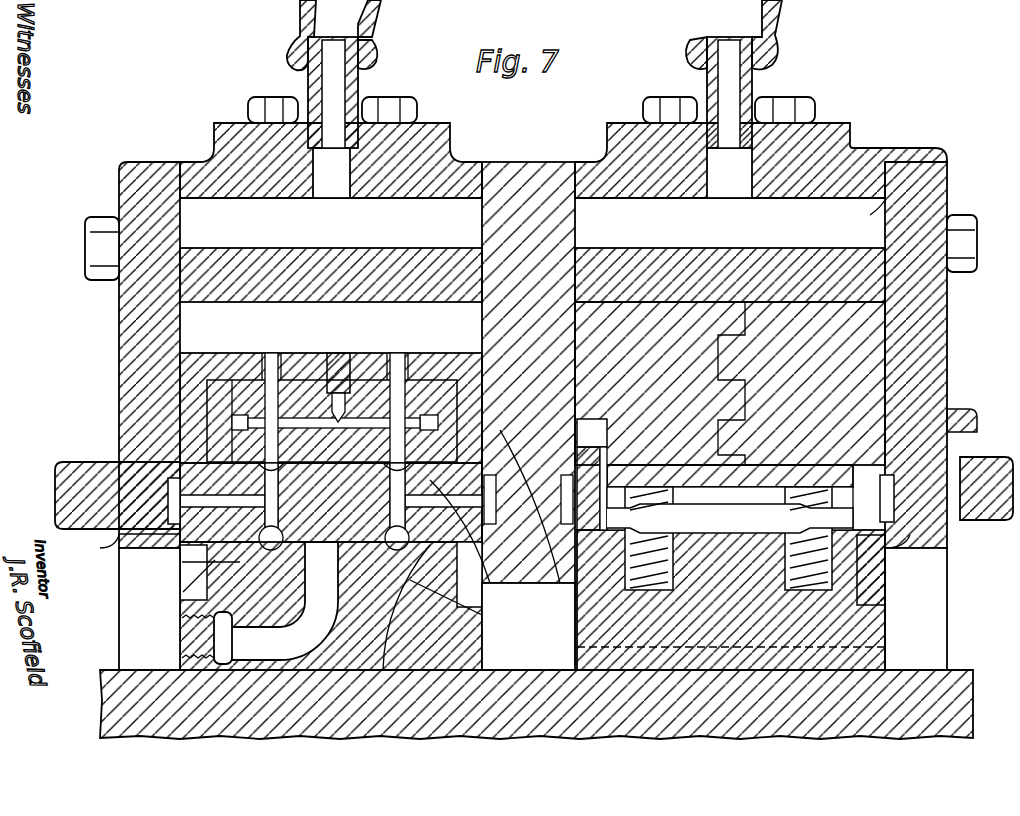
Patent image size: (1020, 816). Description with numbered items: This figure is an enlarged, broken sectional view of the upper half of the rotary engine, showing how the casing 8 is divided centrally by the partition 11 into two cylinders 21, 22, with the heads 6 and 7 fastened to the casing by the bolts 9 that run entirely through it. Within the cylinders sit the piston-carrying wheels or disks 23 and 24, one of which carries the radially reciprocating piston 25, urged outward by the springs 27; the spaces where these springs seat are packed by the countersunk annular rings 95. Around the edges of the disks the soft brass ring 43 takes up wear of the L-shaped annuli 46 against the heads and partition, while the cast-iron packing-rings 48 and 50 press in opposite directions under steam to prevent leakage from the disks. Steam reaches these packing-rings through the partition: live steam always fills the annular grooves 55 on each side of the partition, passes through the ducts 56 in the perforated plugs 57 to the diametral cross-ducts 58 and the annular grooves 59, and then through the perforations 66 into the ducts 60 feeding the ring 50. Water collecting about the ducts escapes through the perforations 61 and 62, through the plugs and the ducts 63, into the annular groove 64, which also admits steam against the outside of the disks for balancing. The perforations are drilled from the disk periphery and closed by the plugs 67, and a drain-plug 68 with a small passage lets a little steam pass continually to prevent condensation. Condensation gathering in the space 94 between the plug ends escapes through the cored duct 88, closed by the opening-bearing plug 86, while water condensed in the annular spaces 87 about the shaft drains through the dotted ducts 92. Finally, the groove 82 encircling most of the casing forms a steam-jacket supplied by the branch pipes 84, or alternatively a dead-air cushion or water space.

The head 6 is at (122, 298).
The head 7 is at (930, 300).
The casing 8 is at (850, 152).
The bolts 9 is at (92, 258).
The partition 11 is at (527, 167).
The cylinder 21 is at (860, 252).
The cylinder 22 is at (197, 250).
The piston-carrying wheel or disk 23 is at (885, 615).
The piston-carrying wheel or disk 24 is at (180, 614).
The piston 25 is at (865, 330).
The springs 27 is at (790, 497).
The soft brass ring 43 is at (240, 372).
The L-shaped annuli 46 is at (192, 364).
The cast-iron packing-ring 48 is at (230, 408).
The cast-iron ring 50 is at (235, 420).
The annular grooves 55 is at (560, 583).
The ducts 56 is at (490, 583).
The pistons or perforated plugs 57 is at (205, 482).
The cross-ducts 58 is at (482, 615).
The annular grooves 59 is at (183, 572).
The ducts 60 is at (300, 410).
The perforations 61 is at (200, 472).
The perforations 62 is at (182, 564).
The ducts 63 is at (100, 527).
The annular groove 64 is at (185, 502).
The perforations 66 is at (335, 418).
The plugs 67 is at (270, 355).
The drain-plug 68 is at (340, 352).
The groove 82 is at (210, 210).
The branch pipes 84 is at (360, 42).
The plug 86 is at (182, 640).
The annular spaces 87 is at (555, 624).
The duct 88 is at (258, 645).
The ducts 92 is at (885, 648).
The space 94 is at (383, 670).
The annular rings 95 is at (940, 555).